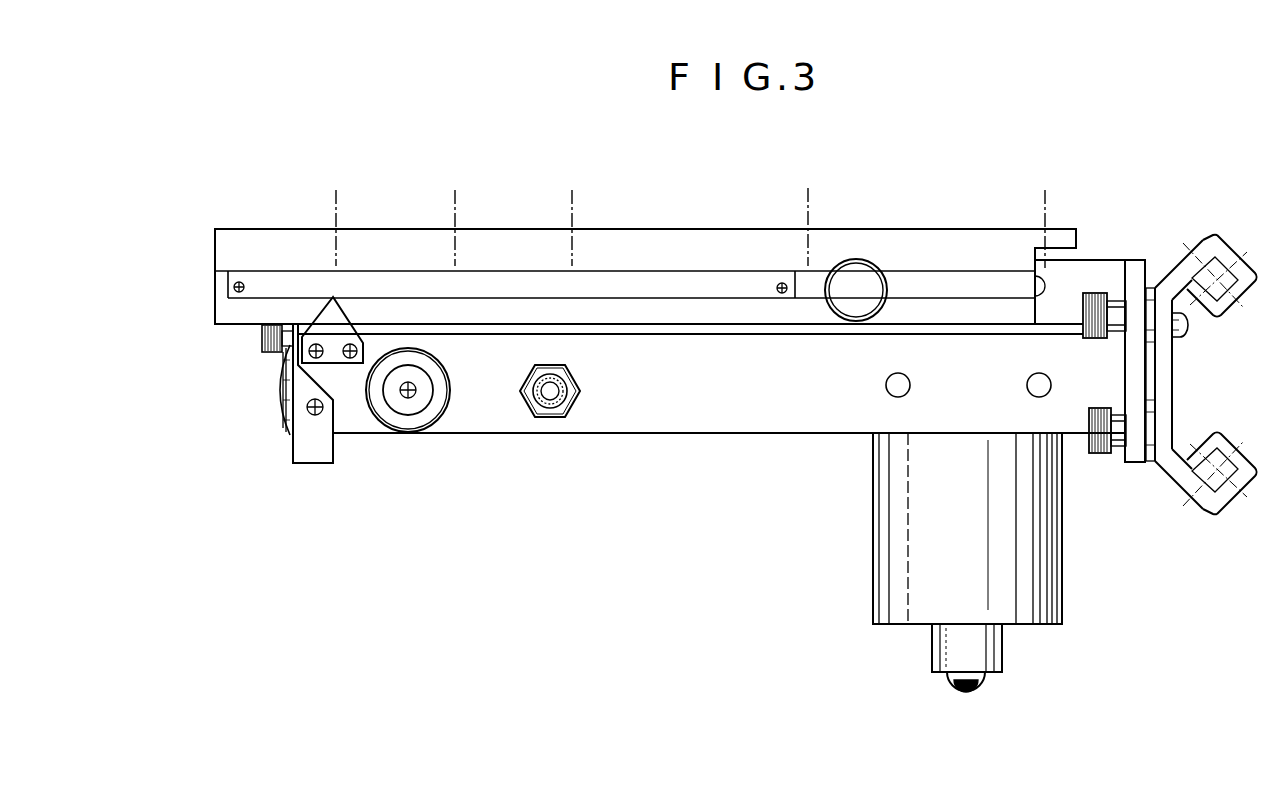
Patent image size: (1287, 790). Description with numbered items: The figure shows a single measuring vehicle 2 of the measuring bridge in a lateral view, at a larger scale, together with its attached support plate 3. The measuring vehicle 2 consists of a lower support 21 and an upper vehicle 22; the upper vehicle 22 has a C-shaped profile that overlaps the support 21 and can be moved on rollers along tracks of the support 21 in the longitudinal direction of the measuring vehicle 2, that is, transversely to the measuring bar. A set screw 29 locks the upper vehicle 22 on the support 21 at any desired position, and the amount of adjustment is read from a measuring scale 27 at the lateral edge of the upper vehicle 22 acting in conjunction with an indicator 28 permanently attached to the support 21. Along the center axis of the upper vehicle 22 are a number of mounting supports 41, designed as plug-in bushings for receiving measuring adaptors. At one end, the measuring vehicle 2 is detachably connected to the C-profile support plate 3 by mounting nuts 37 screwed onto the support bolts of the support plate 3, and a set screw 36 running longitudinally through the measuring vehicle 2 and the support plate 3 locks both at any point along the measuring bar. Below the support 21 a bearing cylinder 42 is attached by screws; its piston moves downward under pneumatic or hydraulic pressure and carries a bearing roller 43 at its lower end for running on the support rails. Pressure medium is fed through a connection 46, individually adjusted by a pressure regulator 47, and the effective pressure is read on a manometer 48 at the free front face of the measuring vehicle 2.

The measuring vehicle 2 is at (700, 436).
The support plate 3 is at (1212, 240).
The support 21 is at (797, 413).
The upper vehicle 22 is at (268, 232).
The measuring scale 27 is at (672, 287).
The indicator 28 is at (337, 314).
The set screw 29 is at (862, 277).
The set screw 36 is at (262, 337).
The mounting nut 37 is at (1089, 338).
The mounting support 41 is at (339, 213).
The bearing cylinder 42 is at (880, 535).
The bearing roller 43 is at (980, 695).
The connection 46 is at (573, 410).
The pressure regulator 47 is at (428, 418).
The manometer 48 is at (282, 403).